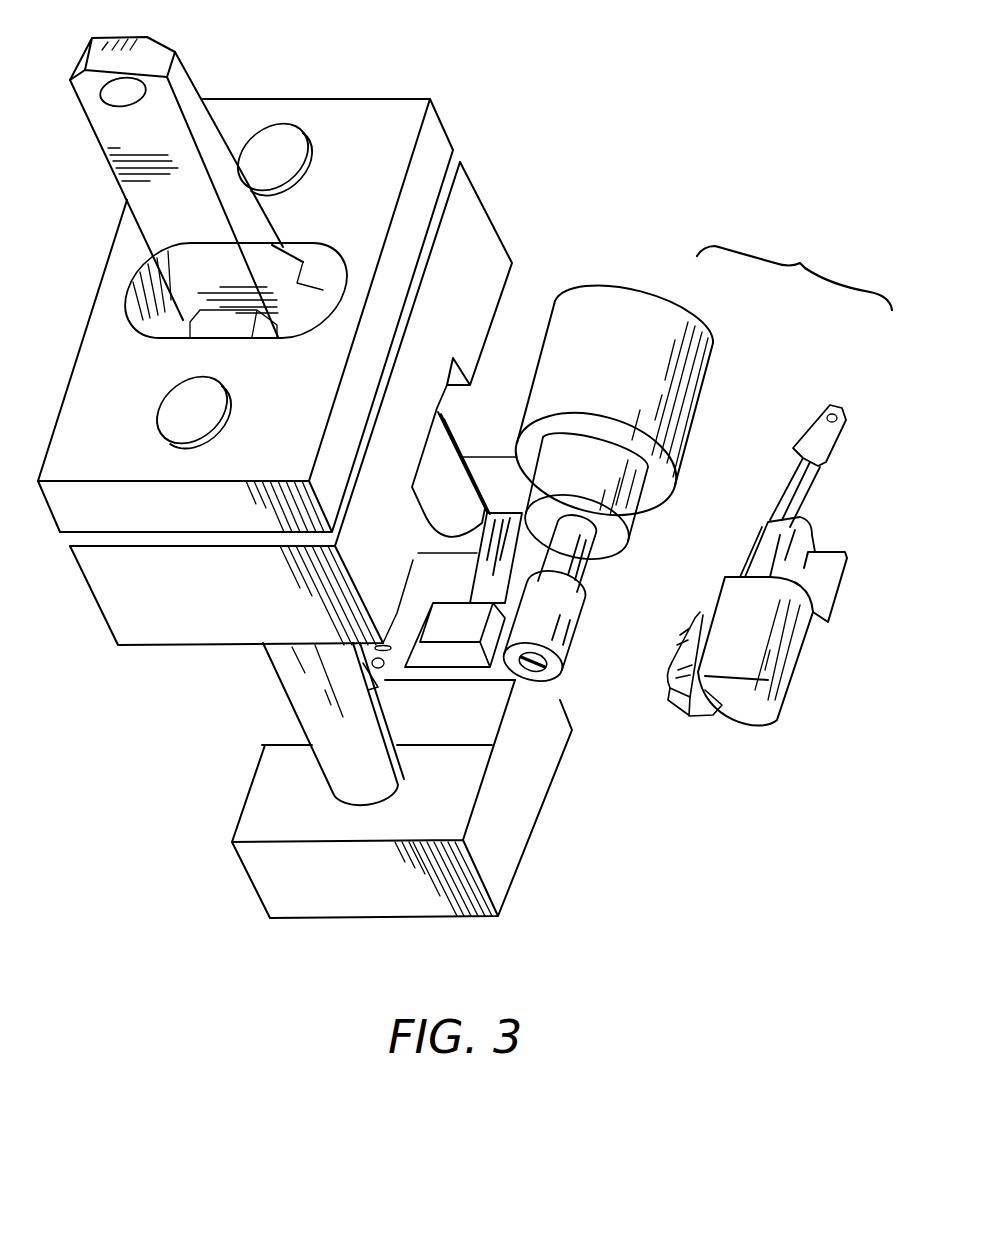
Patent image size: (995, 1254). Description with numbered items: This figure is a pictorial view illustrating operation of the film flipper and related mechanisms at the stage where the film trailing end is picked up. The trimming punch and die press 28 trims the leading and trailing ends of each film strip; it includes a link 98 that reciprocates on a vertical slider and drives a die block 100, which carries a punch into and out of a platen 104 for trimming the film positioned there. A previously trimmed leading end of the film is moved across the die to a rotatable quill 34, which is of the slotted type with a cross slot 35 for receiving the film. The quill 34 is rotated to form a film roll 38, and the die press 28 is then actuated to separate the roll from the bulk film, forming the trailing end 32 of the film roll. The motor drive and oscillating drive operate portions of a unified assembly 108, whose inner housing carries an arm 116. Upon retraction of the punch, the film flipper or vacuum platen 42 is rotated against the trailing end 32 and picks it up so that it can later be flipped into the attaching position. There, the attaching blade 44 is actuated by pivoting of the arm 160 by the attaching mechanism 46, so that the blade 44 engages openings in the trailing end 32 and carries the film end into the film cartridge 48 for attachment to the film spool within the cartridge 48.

The trimming punch and die press 28 is at (243, 801).
The trailing end 32 is at (422, 680).
The rotatable quill 34 is at (565, 569).
The cross slot 35 is at (536, 664).
The film roll 38 is at (556, 667).
The film flipper or vacuum platen 42 is at (468, 657).
The attaching blade 44 is at (690, 630).
The attaching mechanism 46 is at (815, 521).
The film cartridge 48 is at (797, 678).
The link 98 is at (185, 82).
The die block 100 is at (495, 224).
The platen 104 is at (285, 718).
The unified assembly 108 is at (708, 388).
The arm 116 is at (478, 573).
The arm 160 is at (713, 715).